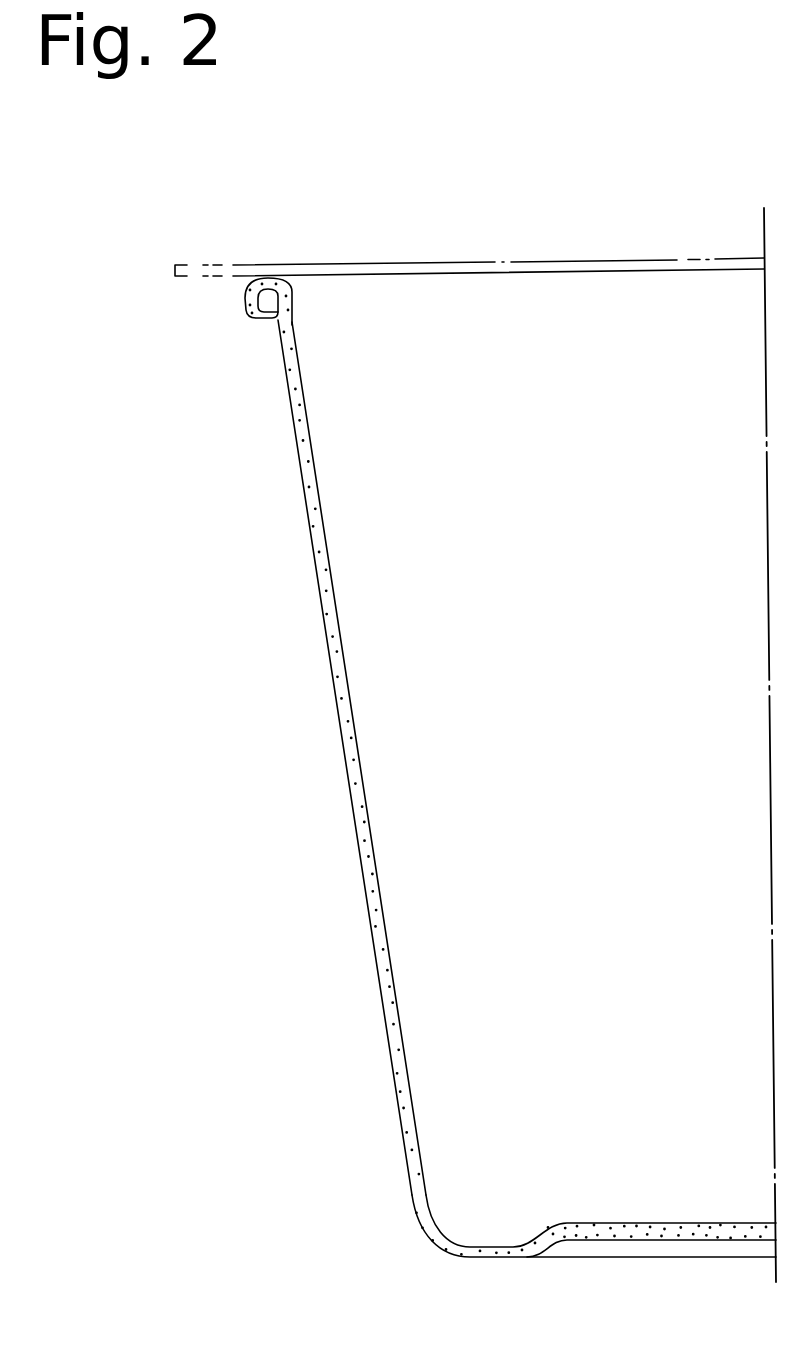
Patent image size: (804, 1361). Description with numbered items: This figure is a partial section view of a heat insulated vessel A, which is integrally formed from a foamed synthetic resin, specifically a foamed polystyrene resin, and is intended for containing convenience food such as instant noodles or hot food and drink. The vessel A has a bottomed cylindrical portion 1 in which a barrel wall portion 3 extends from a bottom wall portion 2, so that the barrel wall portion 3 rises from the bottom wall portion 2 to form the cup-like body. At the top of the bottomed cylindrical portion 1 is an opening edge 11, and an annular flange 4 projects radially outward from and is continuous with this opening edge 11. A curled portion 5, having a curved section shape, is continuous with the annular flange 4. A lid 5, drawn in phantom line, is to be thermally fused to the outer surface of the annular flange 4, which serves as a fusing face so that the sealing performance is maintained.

The bottomed cylindrical portion 1 is at (275, 1022).
The bottom wall portion 2 is at (583, 1227).
The barrel wall portion 3 is at (388, 1033).
The annular flange 4 is at (262, 280).
The curled portion 5 is at (662, 258).
The opening edge 11 is at (290, 300).
The heat insulated vessel A is at (312, 251).